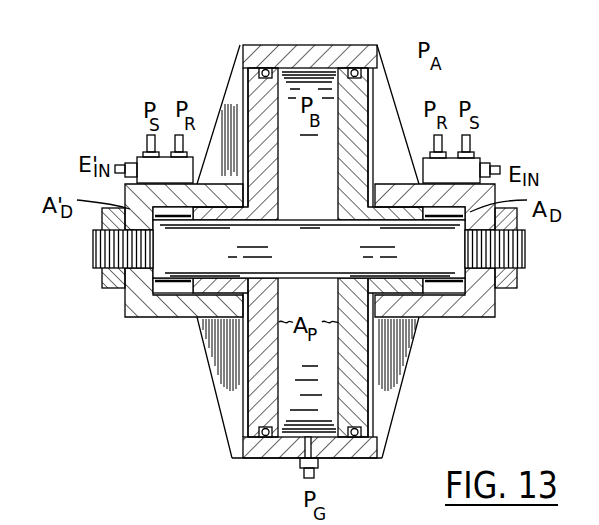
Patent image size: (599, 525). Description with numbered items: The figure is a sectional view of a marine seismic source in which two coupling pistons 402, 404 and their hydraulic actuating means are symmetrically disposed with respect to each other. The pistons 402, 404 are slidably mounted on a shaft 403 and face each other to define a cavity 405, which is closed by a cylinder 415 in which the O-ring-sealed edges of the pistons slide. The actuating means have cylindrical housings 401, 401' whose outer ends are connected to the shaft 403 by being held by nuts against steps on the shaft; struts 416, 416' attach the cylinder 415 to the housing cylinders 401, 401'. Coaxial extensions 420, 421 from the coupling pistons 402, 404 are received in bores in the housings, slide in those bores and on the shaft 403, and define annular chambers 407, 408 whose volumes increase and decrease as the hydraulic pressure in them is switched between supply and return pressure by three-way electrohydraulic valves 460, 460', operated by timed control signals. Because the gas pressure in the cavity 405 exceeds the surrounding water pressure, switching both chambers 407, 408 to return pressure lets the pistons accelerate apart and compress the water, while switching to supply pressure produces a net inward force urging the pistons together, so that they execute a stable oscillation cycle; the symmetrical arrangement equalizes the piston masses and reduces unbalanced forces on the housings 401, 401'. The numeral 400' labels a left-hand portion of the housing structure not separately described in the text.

The left end housing flange 400' is at (184, 141).
The cylindrical housing 401 is at (449, 273).
The cylindrical housing 401' is at (160, 281).
The coupling piston 402 is at (281, 138).
The shaft 403 is at (309, 249).
The coupling piston 404 is at (337, 197).
The cavity 405 is at (284, 458).
The annular chamber 407 is at (454, 295).
The annular chamber 408 is at (168, 294).
The cylinder 415 is at (300, 44).
The strut 416 is at (419, 236).
The strut 416' is at (274, 235).
The coaxial extension 420 is at (199, 292).
The coaxial extension 421 is at (416, 292).
The three-way electrohydraulic valve 460 is at (492, 139).
The three-way electrohydraulic valve 460' is at (130, 144).